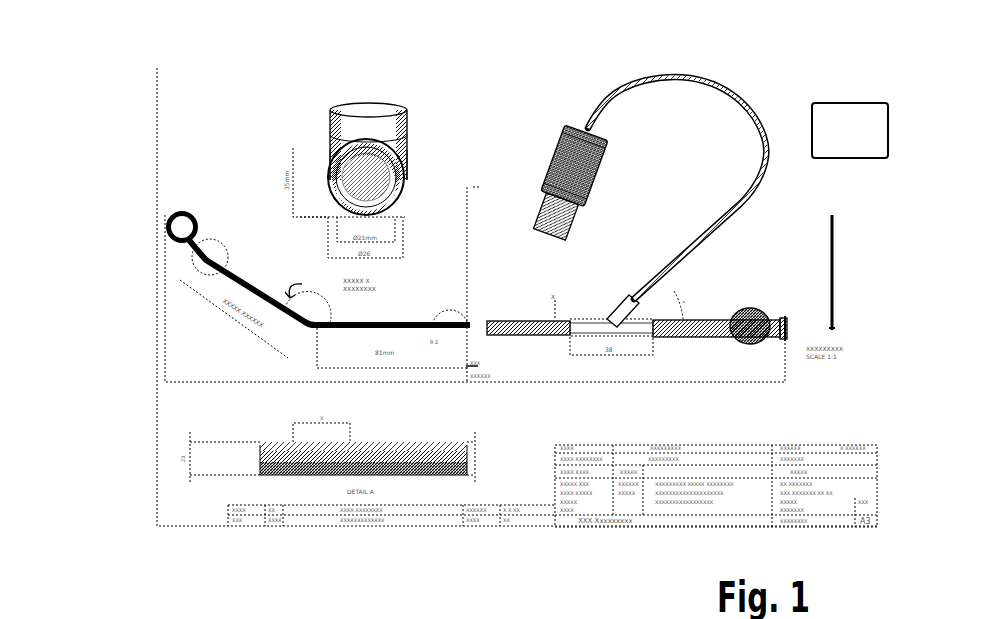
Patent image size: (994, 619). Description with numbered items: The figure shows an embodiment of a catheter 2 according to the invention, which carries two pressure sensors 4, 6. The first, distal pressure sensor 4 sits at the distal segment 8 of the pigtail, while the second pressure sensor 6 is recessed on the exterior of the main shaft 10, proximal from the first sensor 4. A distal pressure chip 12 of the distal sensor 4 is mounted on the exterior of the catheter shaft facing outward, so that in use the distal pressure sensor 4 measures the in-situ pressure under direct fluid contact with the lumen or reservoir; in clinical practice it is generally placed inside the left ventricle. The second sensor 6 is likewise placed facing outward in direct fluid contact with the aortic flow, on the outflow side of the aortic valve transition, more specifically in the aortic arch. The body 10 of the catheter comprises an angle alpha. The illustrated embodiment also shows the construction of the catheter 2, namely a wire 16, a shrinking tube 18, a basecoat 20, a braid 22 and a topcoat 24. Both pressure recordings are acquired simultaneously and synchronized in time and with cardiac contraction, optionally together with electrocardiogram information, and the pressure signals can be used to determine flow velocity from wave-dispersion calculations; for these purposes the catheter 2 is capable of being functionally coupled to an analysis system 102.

The catheter 2 is at (766, 67).
The distal pressure sensor 4 is at (196, 262).
The second pressure sensor 6 is at (448, 338).
The distal segment of pigtail 8 is at (179, 150).
The main shaft 10 is at (395, 321).
The distal pressure chip 12 is at (218, 325).
The wire 16 is at (333, 122).
The shrinking tube 18 is at (328, 150).
The basecoat 20 is at (404, 146).
The braid 22 is at (403, 170).
The topcoat 24 is at (402, 188).
The analysis system 102 is at (885, 155).